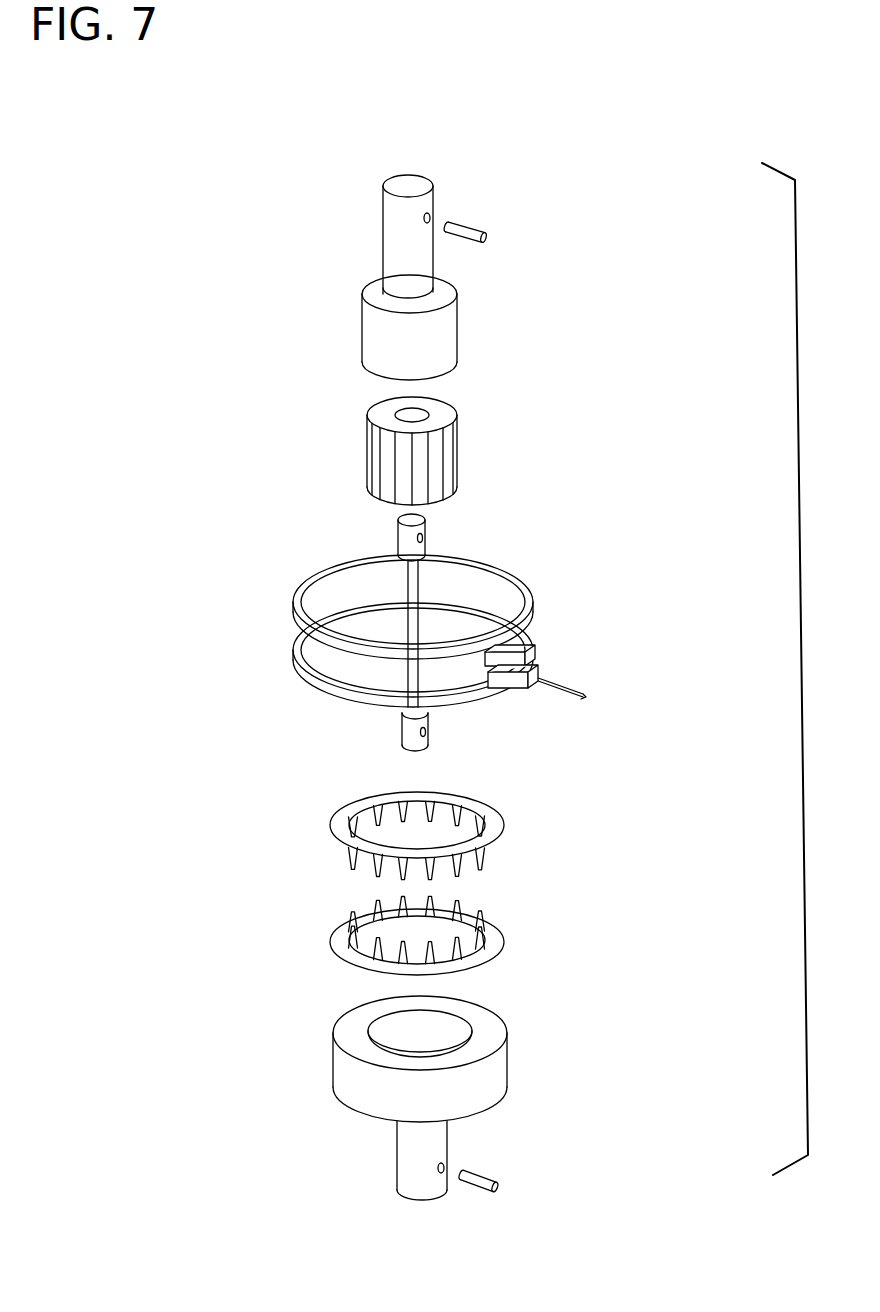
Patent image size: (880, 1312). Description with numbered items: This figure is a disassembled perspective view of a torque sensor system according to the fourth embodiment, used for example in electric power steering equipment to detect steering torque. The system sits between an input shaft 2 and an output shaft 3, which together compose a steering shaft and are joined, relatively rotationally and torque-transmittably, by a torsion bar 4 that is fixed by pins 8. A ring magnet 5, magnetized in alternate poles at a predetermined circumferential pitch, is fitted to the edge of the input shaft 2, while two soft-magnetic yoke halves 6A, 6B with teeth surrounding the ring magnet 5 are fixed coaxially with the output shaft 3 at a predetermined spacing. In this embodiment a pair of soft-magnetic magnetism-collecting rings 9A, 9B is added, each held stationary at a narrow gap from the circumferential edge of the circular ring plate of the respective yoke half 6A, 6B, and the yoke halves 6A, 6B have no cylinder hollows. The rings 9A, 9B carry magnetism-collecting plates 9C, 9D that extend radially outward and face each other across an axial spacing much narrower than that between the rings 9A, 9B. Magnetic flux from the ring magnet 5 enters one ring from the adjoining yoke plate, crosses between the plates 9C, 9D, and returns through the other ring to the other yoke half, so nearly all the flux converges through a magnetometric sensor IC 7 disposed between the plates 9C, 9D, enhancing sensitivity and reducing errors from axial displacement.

The input shaft 2 is at (418, 183).
The output shaft 3 is at (500, 1073).
The torsion bar 4 is at (413, 578).
The ring magnet 5 is at (450, 452).
The magnetic yoke half 6A is at (493, 825).
The magnetic yoke half 6B is at (493, 938).
The magnetometric sensor IC 7 is at (535, 663).
The pin 8 is at (473, 231).
The magnetism-collecting ring 9A is at (515, 578).
The magnetism-collecting ring 9B is at (487, 697).
The magnetism-collecting plate 9C is at (532, 637).
The magnetism-collecting plate 9D is at (520, 687).